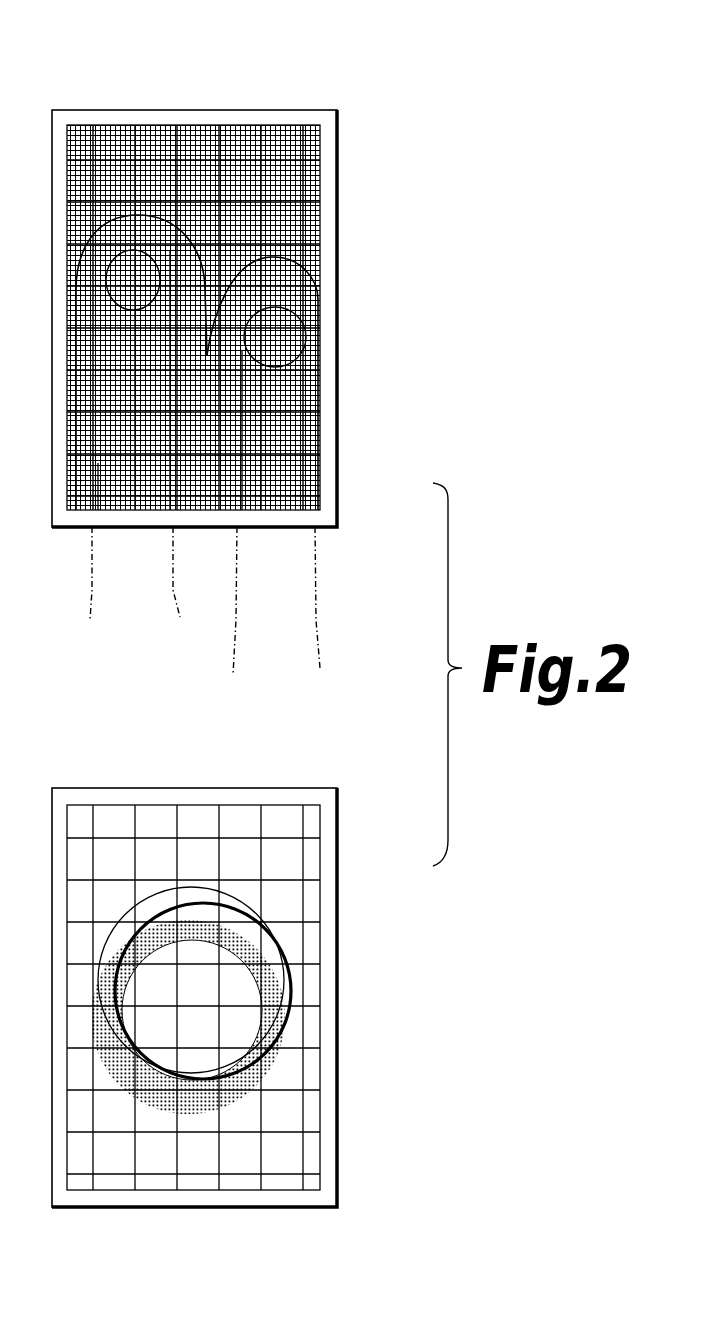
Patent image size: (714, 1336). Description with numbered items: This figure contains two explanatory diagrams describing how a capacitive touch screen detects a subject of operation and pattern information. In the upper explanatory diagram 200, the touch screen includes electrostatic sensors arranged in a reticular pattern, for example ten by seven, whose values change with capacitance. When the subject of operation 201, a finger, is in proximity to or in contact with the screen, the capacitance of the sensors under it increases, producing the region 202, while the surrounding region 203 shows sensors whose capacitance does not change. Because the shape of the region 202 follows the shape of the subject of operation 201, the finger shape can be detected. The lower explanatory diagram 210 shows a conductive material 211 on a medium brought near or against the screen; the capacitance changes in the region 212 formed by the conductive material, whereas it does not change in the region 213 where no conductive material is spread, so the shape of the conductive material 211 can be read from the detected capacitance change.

The explanatory diagram 200 is at (248, 109).
The subject of operation 201 is at (315, 582).
The region where capacitance increases 202 is at (310, 267).
The region where capacitance does not change 203 is at (293, 193).
The explanatory diagram 210 is at (242, 789).
The conductive material 211 is at (278, 950).
The region formed by conductive material 212 is at (277, 1068).
The region where conductive material is not spread 213 is at (298, 872).